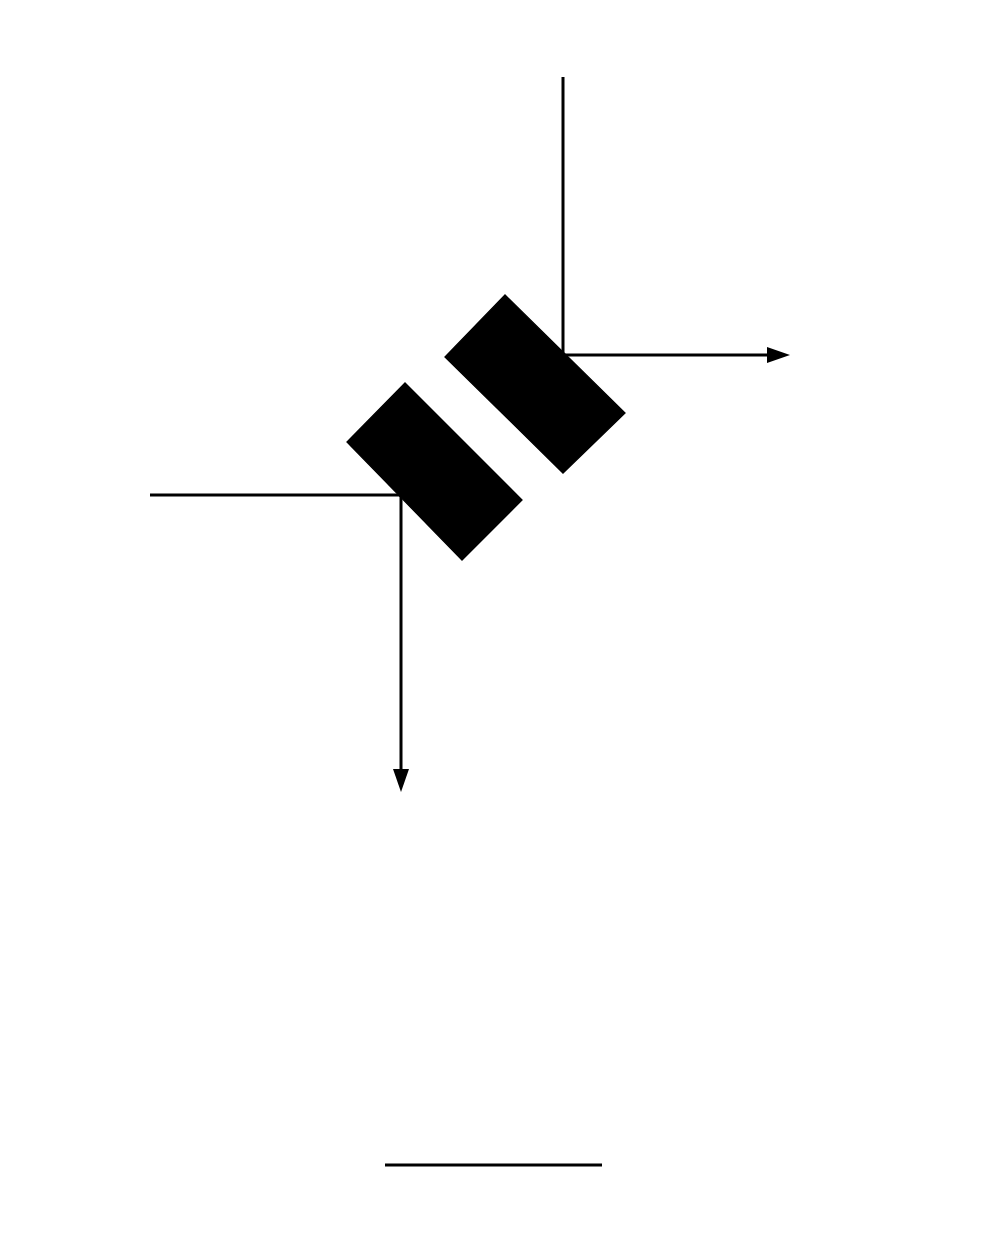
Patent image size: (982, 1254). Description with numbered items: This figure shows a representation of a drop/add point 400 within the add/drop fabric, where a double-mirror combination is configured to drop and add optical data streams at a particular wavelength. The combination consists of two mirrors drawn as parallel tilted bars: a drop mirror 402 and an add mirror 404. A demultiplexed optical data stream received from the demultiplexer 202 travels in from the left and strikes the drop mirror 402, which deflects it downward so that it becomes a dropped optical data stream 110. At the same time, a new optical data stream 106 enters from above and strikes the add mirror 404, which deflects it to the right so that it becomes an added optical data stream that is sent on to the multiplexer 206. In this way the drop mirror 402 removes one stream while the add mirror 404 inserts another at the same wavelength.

The drop/add point 400 is at (457, 596).
The new optical data stream 106 is at (569, 190).
The multiplexer 206 is at (708, 356).
The demultiplexer 202 is at (232, 482).
The dropped optical data stream 110 is at (402, 672).
The drop mirror 402 is at (367, 397).
The add mirror 404 is at (612, 453).